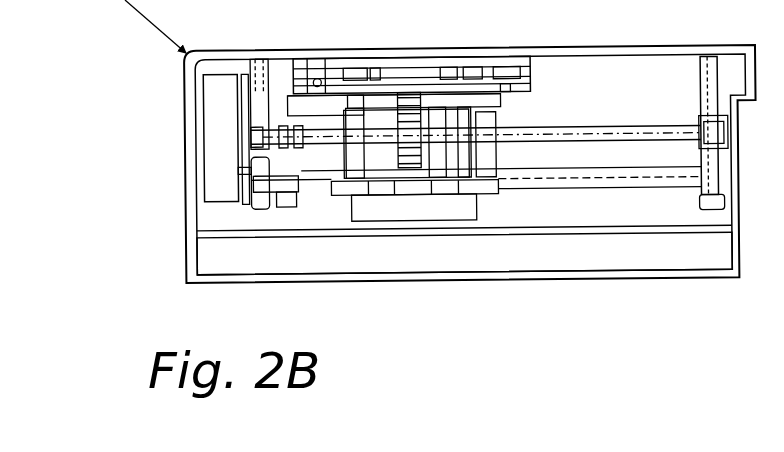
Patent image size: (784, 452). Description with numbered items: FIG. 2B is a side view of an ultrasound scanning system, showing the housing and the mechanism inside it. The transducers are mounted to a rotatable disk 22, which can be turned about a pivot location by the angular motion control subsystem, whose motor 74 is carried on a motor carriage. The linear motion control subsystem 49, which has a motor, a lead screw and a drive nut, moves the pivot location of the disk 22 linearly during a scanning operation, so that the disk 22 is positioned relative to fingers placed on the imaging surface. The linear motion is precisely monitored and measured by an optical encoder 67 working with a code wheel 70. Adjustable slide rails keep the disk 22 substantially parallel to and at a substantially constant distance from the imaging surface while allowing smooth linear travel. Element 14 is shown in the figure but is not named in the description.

The housing 14 is at (250, 3).
The rotatable disk 22 is at (552, 0).
The linear motion control subsystem 49 is at (220, 152).
The optical encoder 67 is at (287, 204).
The code wheel 70 is at (338, 62).
The motor 74 is at (453, 213).